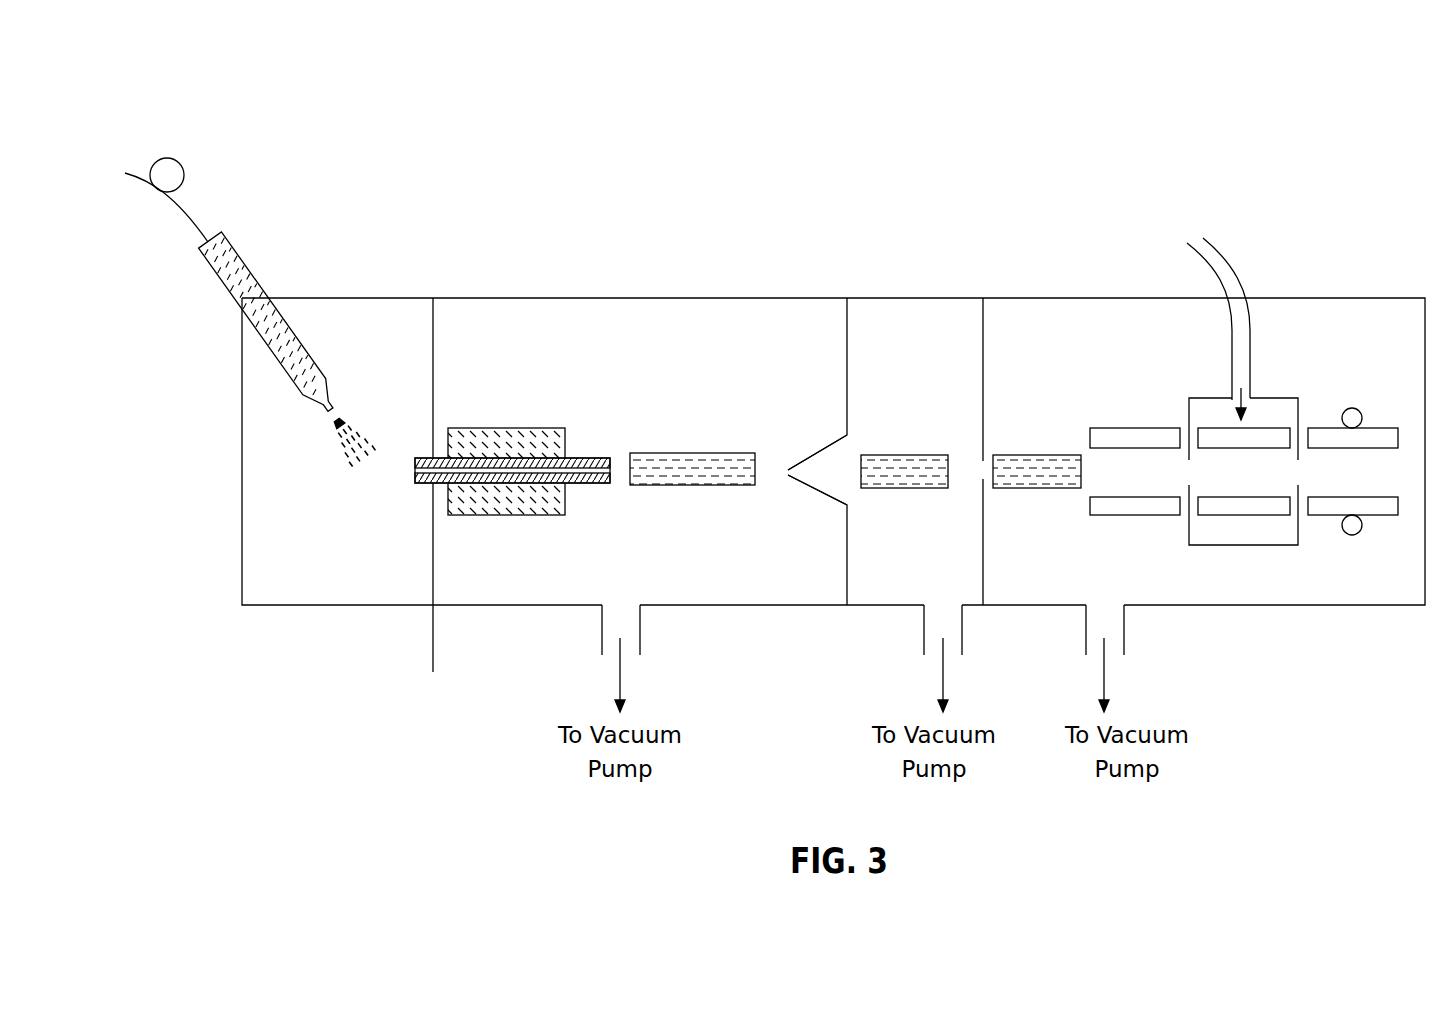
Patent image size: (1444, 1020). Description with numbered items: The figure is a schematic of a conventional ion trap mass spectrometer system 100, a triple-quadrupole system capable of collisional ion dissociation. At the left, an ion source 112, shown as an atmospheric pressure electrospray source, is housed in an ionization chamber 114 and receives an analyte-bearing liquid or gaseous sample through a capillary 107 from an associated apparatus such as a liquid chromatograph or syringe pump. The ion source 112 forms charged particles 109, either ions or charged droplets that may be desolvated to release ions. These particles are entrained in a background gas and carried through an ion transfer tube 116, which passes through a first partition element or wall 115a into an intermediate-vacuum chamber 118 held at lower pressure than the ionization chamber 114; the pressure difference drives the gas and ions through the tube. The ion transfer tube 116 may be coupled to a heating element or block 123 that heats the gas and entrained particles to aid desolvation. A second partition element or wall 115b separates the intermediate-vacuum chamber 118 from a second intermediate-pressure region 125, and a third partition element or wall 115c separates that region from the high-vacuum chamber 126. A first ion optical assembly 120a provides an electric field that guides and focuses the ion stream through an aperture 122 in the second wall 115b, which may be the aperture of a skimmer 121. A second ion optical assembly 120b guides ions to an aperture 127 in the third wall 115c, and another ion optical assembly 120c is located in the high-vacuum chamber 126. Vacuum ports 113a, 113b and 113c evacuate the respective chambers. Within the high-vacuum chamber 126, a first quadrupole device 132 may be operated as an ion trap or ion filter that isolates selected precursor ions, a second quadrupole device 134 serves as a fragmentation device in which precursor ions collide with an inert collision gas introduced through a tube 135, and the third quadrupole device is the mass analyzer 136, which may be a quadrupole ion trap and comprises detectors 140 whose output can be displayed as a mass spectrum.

The ion trap mass spectrometer system 100 is at (810, 128).
The capillary 107 is at (188, 205).
The ion source 112 is at (247, 268).
The charged particles 109 is at (368, 428).
The ionization chamber 114 is at (343, 552).
The first partition element or wall 115a is at (437, 578).
The second partition element or wall 115b is at (843, 577).
The third partition element or wall 115c is at (985, 580).
The ion transfer tube 116 is at (577, 455).
The heating element or block 123 is at (508, 428).
The intermediate-vacuum chamber 118 is at (591, 572).
The first ion optical assembly 120a is at (705, 453).
The second ion optical assembly 120b is at (918, 455).
The ion optical assembly 120c is at (1050, 455).
The skimmer 121 is at (813, 490).
The aperture 122 is at (776, 465).
The second intermediate-pressure region 125 is at (935, 575).
The high-vacuum chamber 126 is at (1116, 560).
The aperture 127 is at (970, 464).
The first quadrupole device 132 is at (1110, 403).
The second quadrupole device 134 is at (1205, 379).
The tube 135 is at (1236, 266).
The mass analyzer 136 is at (1328, 389).
The detectors 140 is at (1362, 414).
The vacuum port 113a is at (640, 632).
The vacuum port 113b is at (962, 632).
The vacuum port 113c is at (1124, 632).